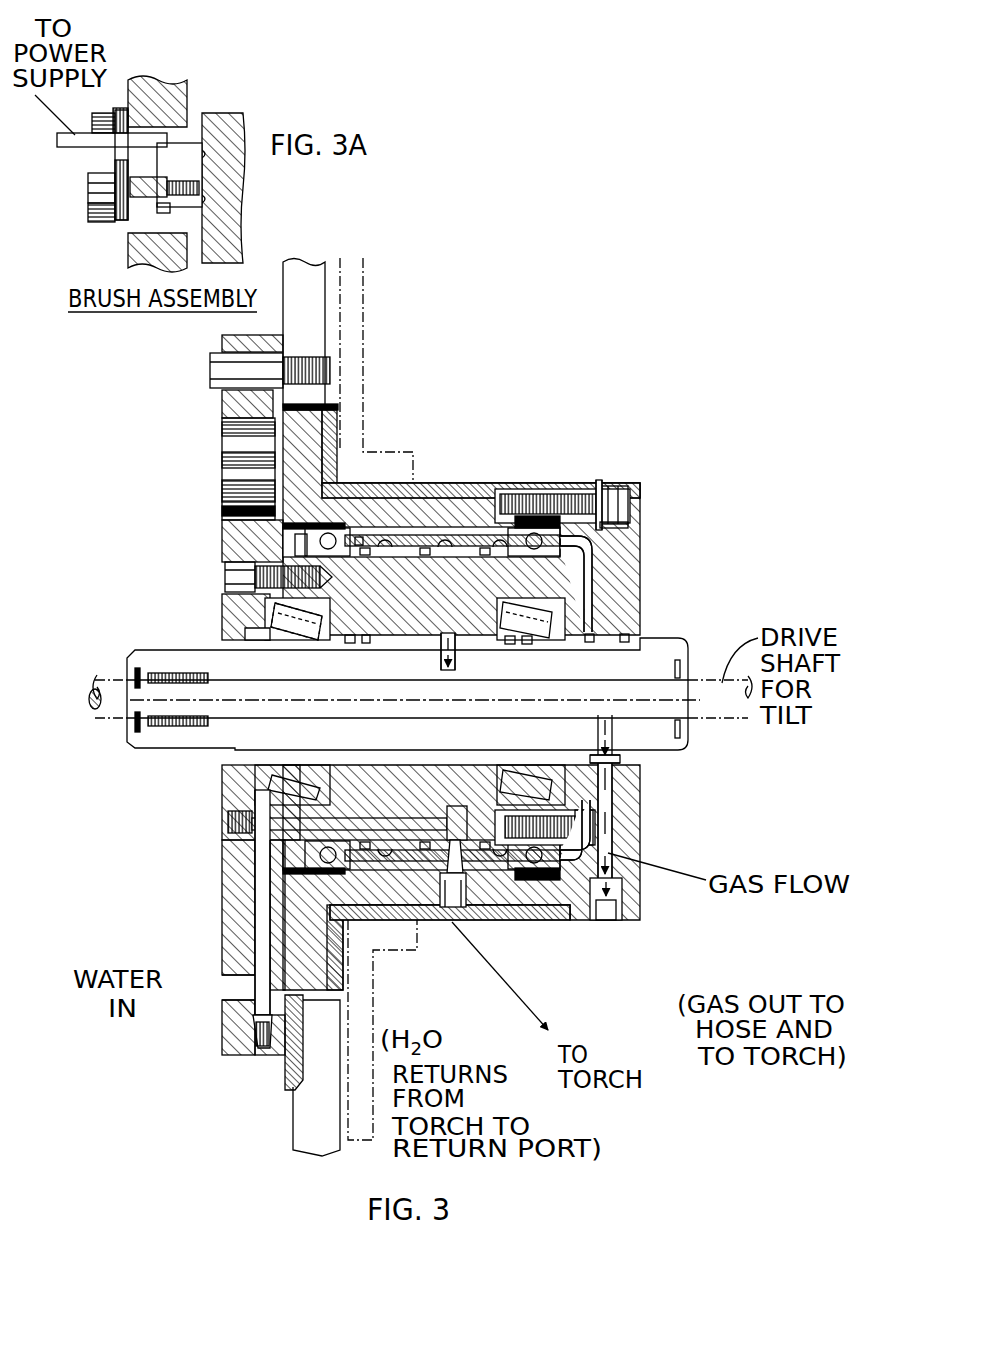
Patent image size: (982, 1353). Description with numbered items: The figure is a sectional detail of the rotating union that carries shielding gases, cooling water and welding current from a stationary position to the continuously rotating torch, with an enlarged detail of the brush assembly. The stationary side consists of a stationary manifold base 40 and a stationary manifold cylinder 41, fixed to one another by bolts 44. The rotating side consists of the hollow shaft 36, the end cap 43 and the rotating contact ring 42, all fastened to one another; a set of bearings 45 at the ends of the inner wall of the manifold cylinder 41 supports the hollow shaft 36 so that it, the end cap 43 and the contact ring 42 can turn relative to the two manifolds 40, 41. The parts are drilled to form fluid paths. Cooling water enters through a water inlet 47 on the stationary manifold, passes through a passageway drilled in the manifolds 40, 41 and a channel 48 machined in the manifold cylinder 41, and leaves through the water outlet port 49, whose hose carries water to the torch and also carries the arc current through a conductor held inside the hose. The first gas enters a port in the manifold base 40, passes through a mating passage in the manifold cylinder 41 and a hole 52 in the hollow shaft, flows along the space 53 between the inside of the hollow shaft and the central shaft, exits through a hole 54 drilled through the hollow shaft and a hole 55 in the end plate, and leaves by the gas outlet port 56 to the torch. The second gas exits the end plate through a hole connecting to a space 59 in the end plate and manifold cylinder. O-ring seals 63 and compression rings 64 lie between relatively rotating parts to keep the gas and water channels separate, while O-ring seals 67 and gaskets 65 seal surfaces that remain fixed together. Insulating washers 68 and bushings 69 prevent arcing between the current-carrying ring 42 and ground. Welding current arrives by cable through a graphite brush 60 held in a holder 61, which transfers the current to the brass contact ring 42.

In FIG. 3, the hollow shaft 36 is at (678, 733).
In FIG. 3, the stationary manifold base 40 is at (247, 1027).
In FIG. 3, the stationary manifold cylinder 41 is at (483, 788).
In FIG. 3A, the rotating contact ring 42 is at (240, 143).
In FIG. 3, the rotating contact ring 42 is at (428, 516).
In FIG. 3, the end cap 43 is at (632, 580).
In FIG. 3, the bolts 44 is at (227, 567).
In FIG. 3, the bearings 45 is at (273, 623).
In FIG. 3, the water inlet 47 is at (237, 985).
In FIG. 3, the channel 48 is at (453, 541).
In FIG. 3, the water outlet port 49 is at (457, 893).
In FIG. 3, the hole 52 is at (440, 657).
In FIG. 3, the space 53 is at (370, 680).
In FIG. 3, the hole 54 is at (613, 732).
In FIG. 3, the hole 55 is at (607, 788).
In FIG. 3, the gas No. 1 outlet port 56 is at (610, 918).
In FIG. 3, the space 59 is at (590, 547).
In FIG. 3A, the graphite brush 60 is at (186, 140).
In FIG. 3A, the holder 61 is at (57, 140).
In FIG. 3, the O-ring seals 63 is at (413, 543).
In FIG. 3, the compression rings 64 is at (360, 543).
In FIG. 3, the gaskets 65 is at (560, 478).
In FIG. 3, the O-ring seals 67 is at (625, 638).
In FIG. 3, the insulating washers 68 is at (633, 497).
In FIG. 3, the bushings 69 is at (614, 525).